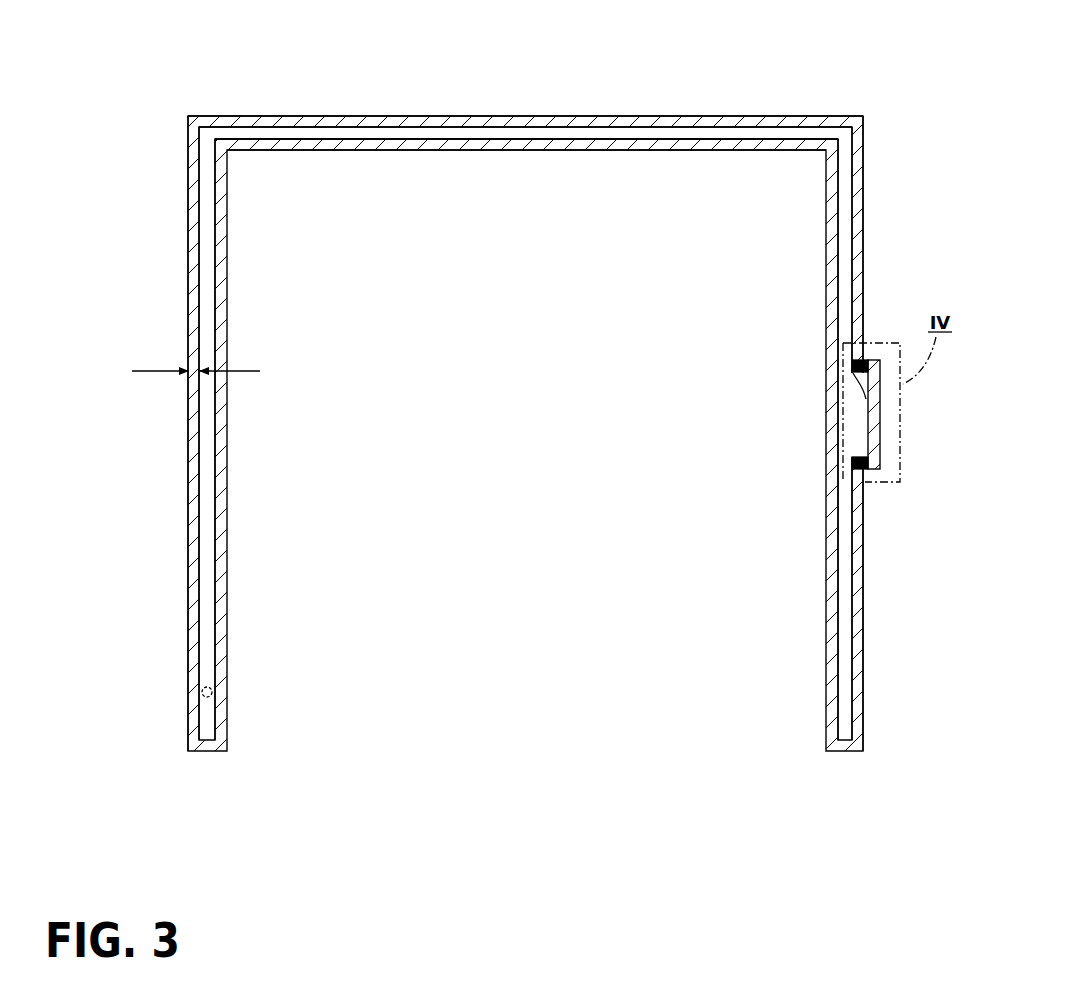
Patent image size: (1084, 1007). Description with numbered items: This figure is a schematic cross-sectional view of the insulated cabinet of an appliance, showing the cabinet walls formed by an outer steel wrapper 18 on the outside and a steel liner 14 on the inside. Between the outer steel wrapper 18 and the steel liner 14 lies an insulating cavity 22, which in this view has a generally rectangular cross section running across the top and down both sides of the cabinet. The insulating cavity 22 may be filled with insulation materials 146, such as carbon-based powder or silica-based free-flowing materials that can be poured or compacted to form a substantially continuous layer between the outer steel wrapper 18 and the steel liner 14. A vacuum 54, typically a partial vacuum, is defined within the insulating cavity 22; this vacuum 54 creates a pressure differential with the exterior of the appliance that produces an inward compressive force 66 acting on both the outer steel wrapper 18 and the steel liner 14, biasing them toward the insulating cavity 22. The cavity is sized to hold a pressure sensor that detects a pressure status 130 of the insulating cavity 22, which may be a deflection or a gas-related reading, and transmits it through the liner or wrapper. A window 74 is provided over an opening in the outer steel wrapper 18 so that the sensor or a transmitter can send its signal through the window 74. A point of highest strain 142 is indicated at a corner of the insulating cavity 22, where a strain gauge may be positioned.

The steel liner 14 is at (505, 150).
The outer steel wrapper 18 is at (662, 117).
The insulating cavity 22 is at (380, 138).
The vacuum 54 is at (277, 127).
The inward compressive force 66 is at (150, 370).
The window 74 is at (880, 437).
The pressure status 130 is at (207, 136).
The point of highest strain 142 is at (845, 136).
The insulation materials 146 is at (204, 692).